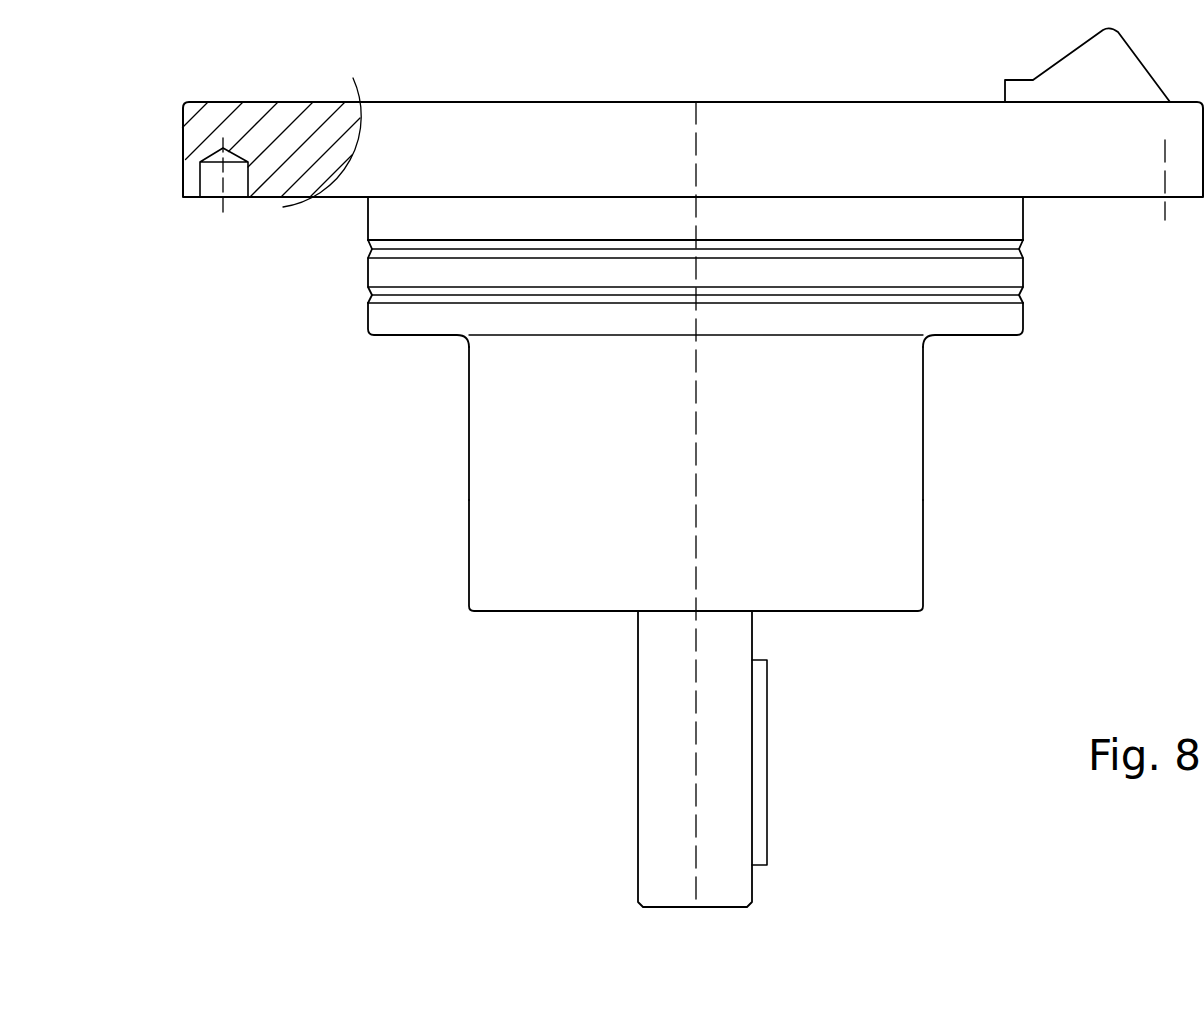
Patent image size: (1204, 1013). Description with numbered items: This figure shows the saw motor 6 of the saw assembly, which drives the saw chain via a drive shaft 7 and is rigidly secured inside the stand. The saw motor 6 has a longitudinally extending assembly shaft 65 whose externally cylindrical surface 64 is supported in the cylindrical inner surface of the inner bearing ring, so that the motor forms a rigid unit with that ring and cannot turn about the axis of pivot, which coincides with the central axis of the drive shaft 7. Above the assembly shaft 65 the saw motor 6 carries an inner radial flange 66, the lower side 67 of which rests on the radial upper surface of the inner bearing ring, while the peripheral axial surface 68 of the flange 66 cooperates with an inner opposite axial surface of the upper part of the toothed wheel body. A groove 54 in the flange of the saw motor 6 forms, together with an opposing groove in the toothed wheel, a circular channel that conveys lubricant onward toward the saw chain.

The saw motor 6 is at (458, 445).
The drive shaft 7 is at (652, 745).
The groove 54 is at (782, 298).
The externally cylindrical surface 64 is at (923, 458).
The assembly shaft 65 is at (903, 537).
The inner radial flange 66 is at (782, 207).
The lower side 67 is at (1007, 337).
The peripheral axial surface 68 is at (1023, 222).